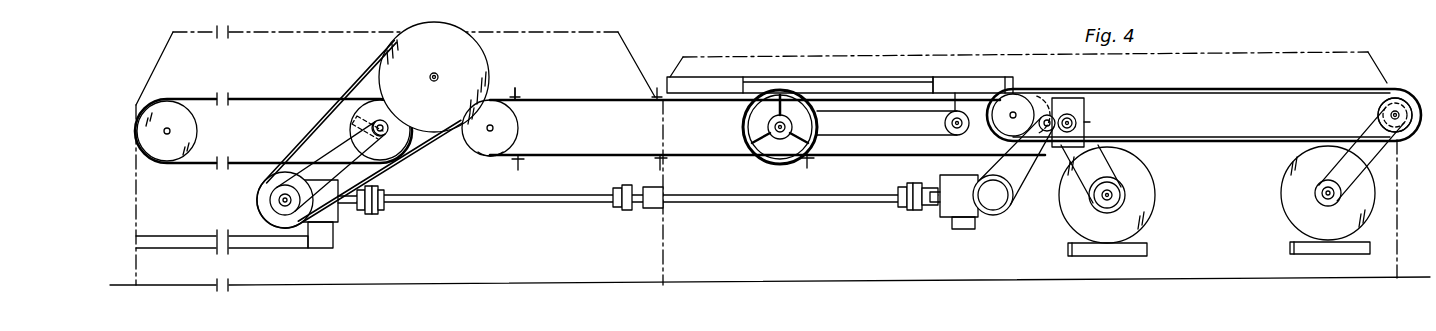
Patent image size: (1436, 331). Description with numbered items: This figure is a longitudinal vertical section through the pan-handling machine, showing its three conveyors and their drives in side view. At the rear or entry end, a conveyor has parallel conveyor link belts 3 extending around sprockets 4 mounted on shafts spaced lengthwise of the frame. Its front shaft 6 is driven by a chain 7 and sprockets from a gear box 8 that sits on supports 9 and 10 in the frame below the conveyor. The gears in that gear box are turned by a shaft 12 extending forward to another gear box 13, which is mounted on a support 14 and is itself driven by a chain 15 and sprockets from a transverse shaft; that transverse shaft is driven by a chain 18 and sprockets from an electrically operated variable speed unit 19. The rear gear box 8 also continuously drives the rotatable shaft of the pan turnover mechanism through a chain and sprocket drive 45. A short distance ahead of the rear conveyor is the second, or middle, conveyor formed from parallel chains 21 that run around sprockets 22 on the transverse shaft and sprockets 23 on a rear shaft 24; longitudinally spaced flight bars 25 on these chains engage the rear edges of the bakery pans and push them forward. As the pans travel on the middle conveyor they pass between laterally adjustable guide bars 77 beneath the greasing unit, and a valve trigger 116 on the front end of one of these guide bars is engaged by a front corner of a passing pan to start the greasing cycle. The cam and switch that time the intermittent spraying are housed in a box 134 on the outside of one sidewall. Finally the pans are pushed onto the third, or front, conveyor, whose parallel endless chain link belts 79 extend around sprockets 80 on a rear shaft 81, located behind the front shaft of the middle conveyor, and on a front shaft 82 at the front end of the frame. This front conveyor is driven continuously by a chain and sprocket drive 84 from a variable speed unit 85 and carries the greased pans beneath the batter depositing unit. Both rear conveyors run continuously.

The conveyor link belts 3 is at (236, 96).
The sprockets 4 is at (172, 152).
The front shaft 6 is at (388, 127).
The chain 7 is at (322, 146).
The gear box 8 is at (342, 214).
The support 9 is at (240, 276).
The support 10 is at (319, 236).
The shaft 12 is at (566, 201).
The gear box 13 is at (946, 210).
The support 14 is at (966, 229).
The chain 15 is at (1022, 190).
The chain 18 is at (1119, 160).
The variable speed unit 19 is at (1144, 206).
The chains 21 is at (624, 100).
The sprockets 22 is at (1054, 104).
The sprockets 23 is at (492, 148).
The rear shaft 24 is at (494, 128).
The flight bars 25 is at (518, 96).
The chain and sprocket drive 45 is at (359, 88).
The guide bars 77 is at (836, 84).
The chain link belts 79 is at (1222, 91).
The sprockets 80 is at (999, 130).
The rear shaft 81 is at (1016, 112).
The front shaft 82 is at (1416, 90).
The chain and sprocket drive 84 is at (1380, 158).
The variable speed unit 85 is at (1298, 220).
The valve trigger 116 is at (1013, 77).
The box 134 is at (1086, 105).